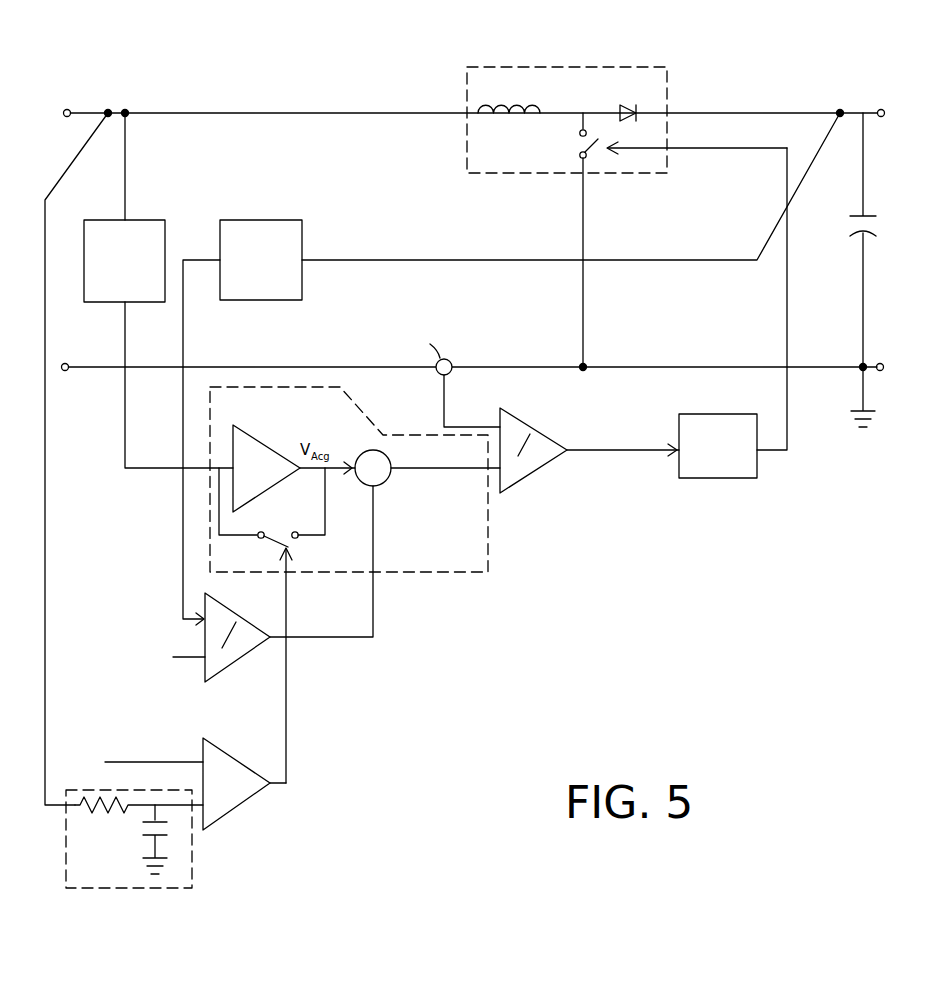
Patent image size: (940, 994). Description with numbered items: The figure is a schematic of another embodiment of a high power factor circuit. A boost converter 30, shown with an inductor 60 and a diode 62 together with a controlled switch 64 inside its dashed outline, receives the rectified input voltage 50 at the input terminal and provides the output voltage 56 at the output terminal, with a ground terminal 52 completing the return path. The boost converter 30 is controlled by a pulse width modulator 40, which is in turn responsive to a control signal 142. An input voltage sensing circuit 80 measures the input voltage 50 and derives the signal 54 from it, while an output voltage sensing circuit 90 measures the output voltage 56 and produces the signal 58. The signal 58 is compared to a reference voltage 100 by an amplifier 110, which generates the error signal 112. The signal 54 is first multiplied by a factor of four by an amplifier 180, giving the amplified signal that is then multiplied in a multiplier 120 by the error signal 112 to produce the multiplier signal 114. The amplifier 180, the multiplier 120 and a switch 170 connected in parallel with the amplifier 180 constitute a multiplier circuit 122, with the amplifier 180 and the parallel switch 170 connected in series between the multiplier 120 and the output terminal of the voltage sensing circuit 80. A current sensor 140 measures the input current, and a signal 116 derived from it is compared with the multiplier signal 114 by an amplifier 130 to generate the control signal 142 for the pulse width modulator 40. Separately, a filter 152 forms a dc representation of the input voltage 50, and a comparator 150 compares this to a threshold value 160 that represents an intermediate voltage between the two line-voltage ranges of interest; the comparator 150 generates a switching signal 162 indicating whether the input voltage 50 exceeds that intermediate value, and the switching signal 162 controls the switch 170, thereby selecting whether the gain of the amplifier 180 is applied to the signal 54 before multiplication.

The boost converter 30 is at (667, 67).
The pulse width modulator 40 is at (757, 472).
The input voltage 50 is at (80, 98).
The ground terminal 52 is at (63, 375).
The signal VAC 54 is at (160, 445).
The output voltage 56 is at (880, 104).
The signal Vos 58 is at (148, 520).
The inductor 60 is at (492, 118).
The diode 62 is at (640, 107).
The switch 64 is at (590, 153).
The input voltage sensing circuit 80 is at (140, 218).
The output voltage sensing circuit 90 is at (302, 228).
The reference voltage 100 is at (150, 668).
The amplifier 110 is at (233, 672).
The error signal 112 is at (345, 660).
The multiplier signal 114 is at (436, 498).
The Vi input line 116 is at (405, 416).
The multiplier 120 is at (387, 455).
The multiplier circuit 122 is at (432, 572).
The amplifier 130 is at (528, 482).
The current sensor 140 is at (452, 372).
The control signal 142 is at (613, 428).
The comparator 150 is at (228, 812).
The filter 152 is at (192, 870).
The threshold value 160 is at (105, 758).
The switching signal 162 is at (318, 775).
The switch 170 is at (278, 531).
The amplifier 180 is at (245, 430).